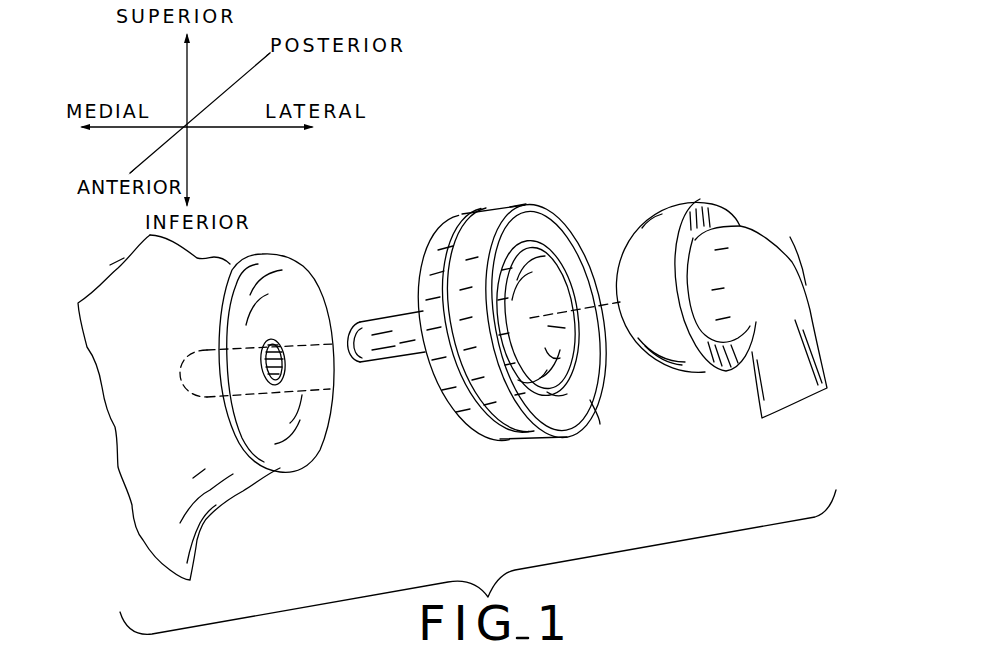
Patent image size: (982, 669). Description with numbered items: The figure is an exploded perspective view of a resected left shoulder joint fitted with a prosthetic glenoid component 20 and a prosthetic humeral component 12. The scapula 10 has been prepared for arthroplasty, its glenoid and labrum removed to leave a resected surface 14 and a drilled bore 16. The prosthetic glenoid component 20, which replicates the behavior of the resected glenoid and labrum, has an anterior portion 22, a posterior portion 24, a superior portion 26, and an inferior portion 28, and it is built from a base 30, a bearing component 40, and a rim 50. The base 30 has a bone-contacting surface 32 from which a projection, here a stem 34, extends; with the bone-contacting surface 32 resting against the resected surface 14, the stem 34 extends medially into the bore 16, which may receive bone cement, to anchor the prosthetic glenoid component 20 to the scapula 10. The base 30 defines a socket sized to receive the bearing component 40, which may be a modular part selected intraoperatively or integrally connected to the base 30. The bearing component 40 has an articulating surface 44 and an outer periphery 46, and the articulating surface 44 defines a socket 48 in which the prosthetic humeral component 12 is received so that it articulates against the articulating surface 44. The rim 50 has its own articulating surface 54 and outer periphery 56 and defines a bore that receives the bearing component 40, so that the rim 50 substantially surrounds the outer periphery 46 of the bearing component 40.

The scapula 10 is at (320, 244).
The prosthetic humeral component 12 is at (732, 272).
The resected surface 14 is at (290, 447).
The drilled bore 16 is at (290, 374).
The prosthetic glenoid component 20 is at (522, 295).
The anterior portion 22 is at (483, 311).
The posterior portion 24 is at (609, 256).
The superior portion 26 is at (480, 186).
The inferior portion 28 is at (536, 444).
The base 30 is at (461, 429).
The bone-contacting surface 32 is at (424, 258).
The stem 34 is at (380, 322).
The bearing component 40 is at (554, 286).
The articulating surface 44 is at (548, 352).
The outer periphery 46 is at (556, 395).
The socket 48 is at (560, 330).
The rim 50 is at (595, 411).
The articulating surface 54 is at (572, 247).
The outer periphery 56 is at (522, 204).